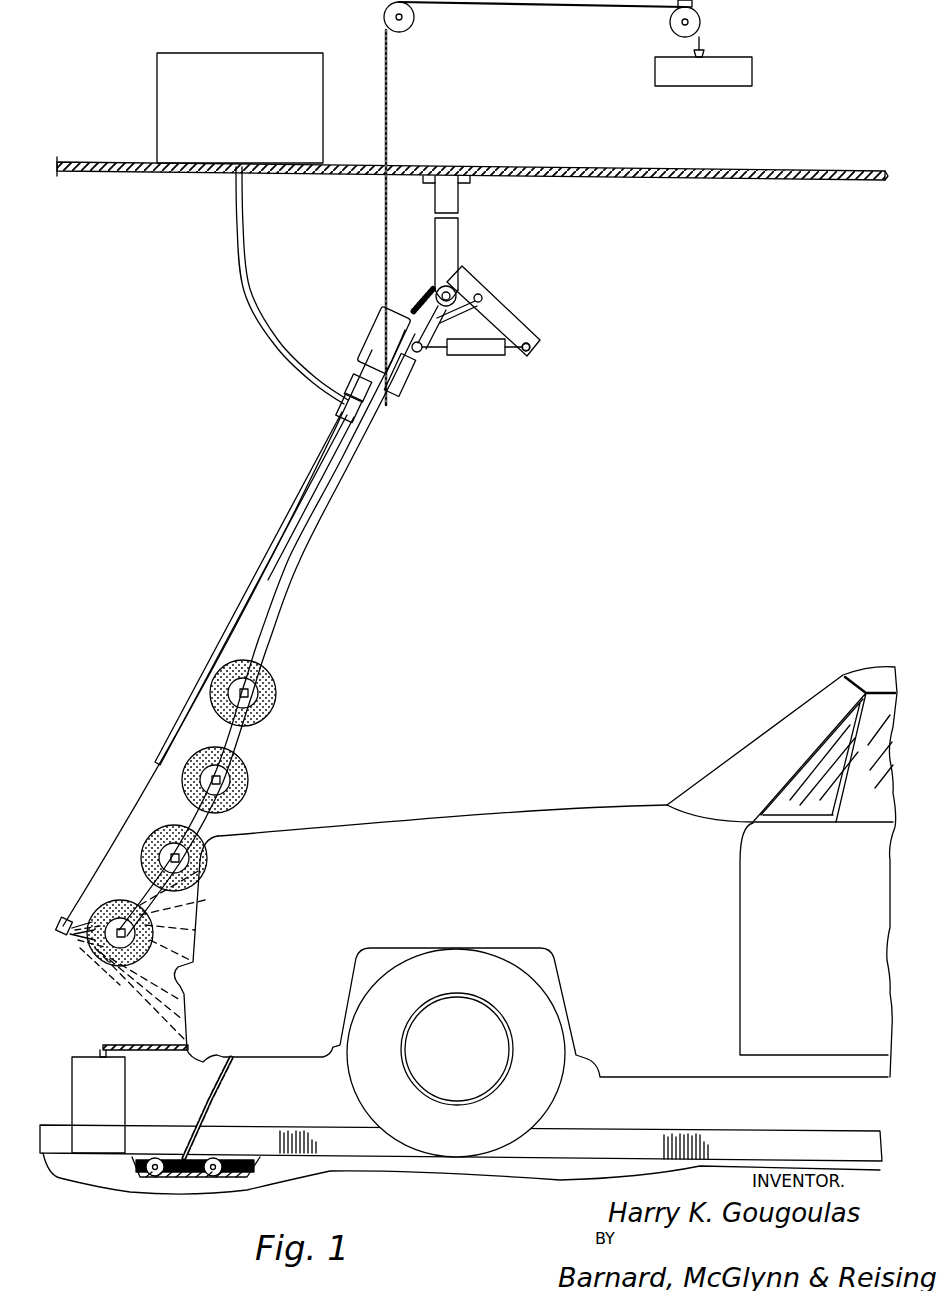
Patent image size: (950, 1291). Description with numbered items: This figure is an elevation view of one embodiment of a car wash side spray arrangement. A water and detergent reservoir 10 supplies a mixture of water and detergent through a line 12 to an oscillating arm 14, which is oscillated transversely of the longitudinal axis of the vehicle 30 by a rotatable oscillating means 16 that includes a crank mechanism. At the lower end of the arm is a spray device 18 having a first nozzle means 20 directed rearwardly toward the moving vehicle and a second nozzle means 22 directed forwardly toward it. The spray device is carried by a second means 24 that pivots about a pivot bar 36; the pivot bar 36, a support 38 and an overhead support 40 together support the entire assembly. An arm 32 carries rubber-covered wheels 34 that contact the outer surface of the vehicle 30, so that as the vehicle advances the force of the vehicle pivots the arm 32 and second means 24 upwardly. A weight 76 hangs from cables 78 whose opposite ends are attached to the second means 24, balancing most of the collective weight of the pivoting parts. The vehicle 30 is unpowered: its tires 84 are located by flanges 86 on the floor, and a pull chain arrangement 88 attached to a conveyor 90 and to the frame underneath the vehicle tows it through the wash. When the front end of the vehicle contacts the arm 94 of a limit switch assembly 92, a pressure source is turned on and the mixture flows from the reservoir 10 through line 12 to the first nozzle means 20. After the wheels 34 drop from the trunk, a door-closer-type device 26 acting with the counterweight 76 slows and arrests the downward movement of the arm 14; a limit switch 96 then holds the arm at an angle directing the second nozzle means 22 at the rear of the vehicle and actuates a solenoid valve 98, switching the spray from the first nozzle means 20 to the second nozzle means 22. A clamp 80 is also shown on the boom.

The water and detergent reservoir 10 is at (267, 52).
The line 12 is at (237, 236).
The oscillating arm 14 is at (280, 523).
The oscillating means 16 is at (360, 326).
The spray device 18 is at (58, 915).
The first nozzle means 20 is at (70, 946).
The second nozzle means 22 is at (58, 930).
The second means 24 is at (427, 357).
The door-closer-type device 26 is at (490, 355).
The vehicle 30 is at (488, 802).
The arm 32 is at (272, 614).
The wheels 34 is at (242, 778).
The pivot bar 36 is at (442, 288).
The support 38 is at (459, 236).
The overhead support 40 is at (600, 167).
The weight 76 is at (745, 72).
The cables 78 is at (548, 8).
The clamp 80 is at (398, 382).
The tires 84 is at (452, 1160).
The flanges 86 is at (795, 1141).
The pull chain arrangement 88 is at (226, 1093).
The conveyor 90 is at (158, 1179).
The limit switch assembly 92 is at (77, 1073).
The arm 94 is at (142, 1050).
The limit switch 96 is at (470, 318).
The solenoid valve 98 is at (350, 382).